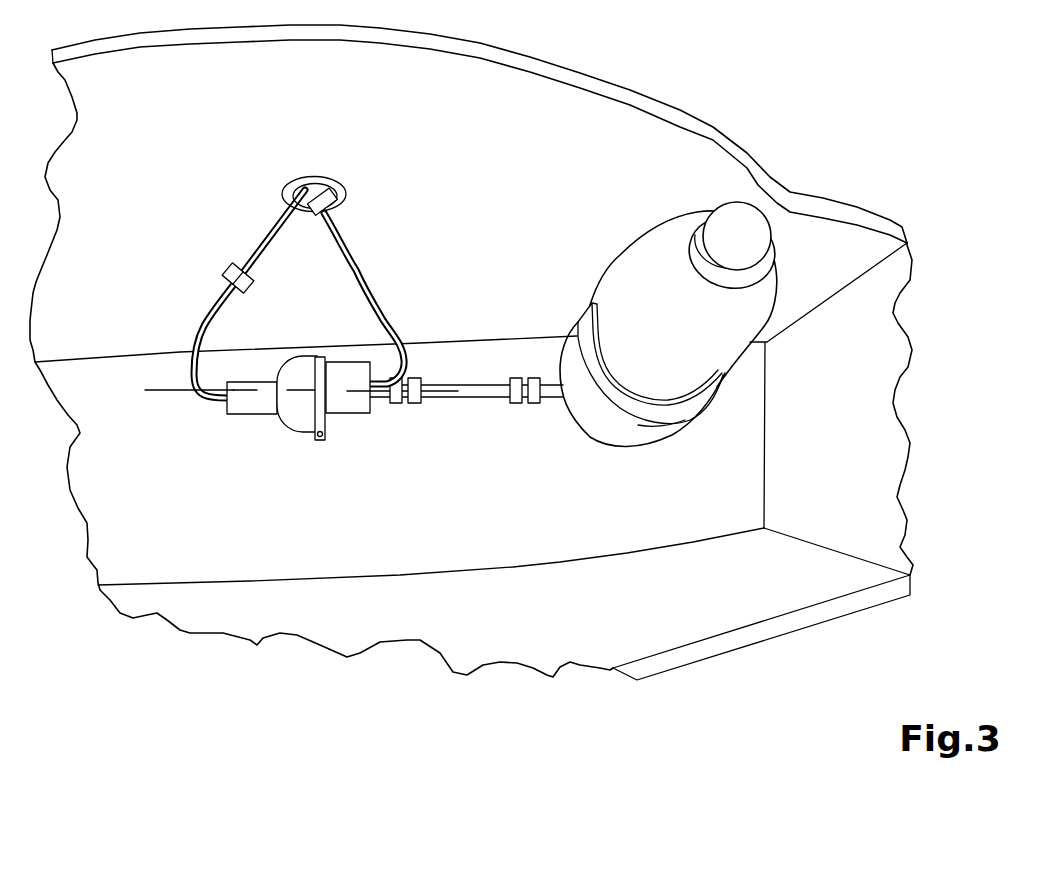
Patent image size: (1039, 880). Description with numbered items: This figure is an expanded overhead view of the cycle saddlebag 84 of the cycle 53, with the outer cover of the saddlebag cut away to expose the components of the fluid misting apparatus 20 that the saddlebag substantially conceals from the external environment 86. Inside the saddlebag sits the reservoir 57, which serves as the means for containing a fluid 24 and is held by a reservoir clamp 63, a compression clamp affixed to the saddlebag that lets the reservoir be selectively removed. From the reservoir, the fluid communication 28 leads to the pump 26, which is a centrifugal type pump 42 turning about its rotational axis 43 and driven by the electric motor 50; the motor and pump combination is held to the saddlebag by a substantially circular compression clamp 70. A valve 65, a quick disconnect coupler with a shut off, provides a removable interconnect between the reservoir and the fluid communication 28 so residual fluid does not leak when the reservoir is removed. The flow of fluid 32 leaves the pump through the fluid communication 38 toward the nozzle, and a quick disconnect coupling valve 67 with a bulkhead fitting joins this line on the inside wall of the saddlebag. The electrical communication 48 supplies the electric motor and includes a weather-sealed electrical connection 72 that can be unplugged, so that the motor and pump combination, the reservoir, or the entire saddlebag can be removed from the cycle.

The fluid misting apparatus 20 is at (501, 379).
The means for containing a fluid 24 is at (672, 218).
The pump 26 is at (298, 539).
The fluid communication between pump and means for containing a fluid 28 is at (483, 375).
The flow of fluid 32 is at (451, 418).
The fluid communication between nozzle and pump 38 is at (362, 250).
The centrifugal type pump 42 is at (333, 388).
The centrifugal type pump rotational axis 43 is at (173, 390).
The electrical communication between power supply and electric motor 48 is at (190, 325).
The electric motor 50 is at (280, 421).
The cycle 53 is at (145, 617).
The reservoir 57 is at (653, 338).
The reservoir clamp 63 is at (638, 425).
The valve 65 is at (537, 403).
The valve 67 is at (338, 190).
The pump clamp 70 is at (320, 440).
The electrical connection 72 is at (233, 270).
The cycle saddlebag 84 is at (797, 433).
The external environment 86 is at (942, 413).